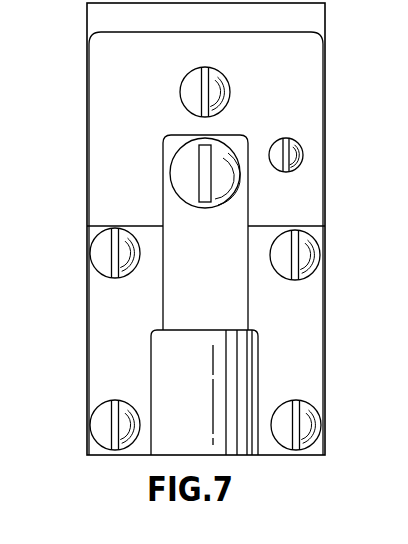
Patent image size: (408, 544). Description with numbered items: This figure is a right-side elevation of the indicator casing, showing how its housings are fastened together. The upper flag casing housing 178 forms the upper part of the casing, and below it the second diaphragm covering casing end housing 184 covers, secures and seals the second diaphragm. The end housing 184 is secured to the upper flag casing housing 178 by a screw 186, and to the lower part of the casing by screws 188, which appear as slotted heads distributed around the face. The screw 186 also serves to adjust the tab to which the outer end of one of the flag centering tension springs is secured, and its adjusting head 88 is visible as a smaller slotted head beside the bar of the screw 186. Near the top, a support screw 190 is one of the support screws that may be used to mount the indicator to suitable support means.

The upper flag casing housing 178 is at (308, 55).
The second diaphragm covering casing end housing 184 is at (108, 332).
The screw 186 is at (190, 155).
The screws 188 is at (100, 246).
The support screws 190 is at (196, 82).
The adjusting head 88 is at (303, 158).